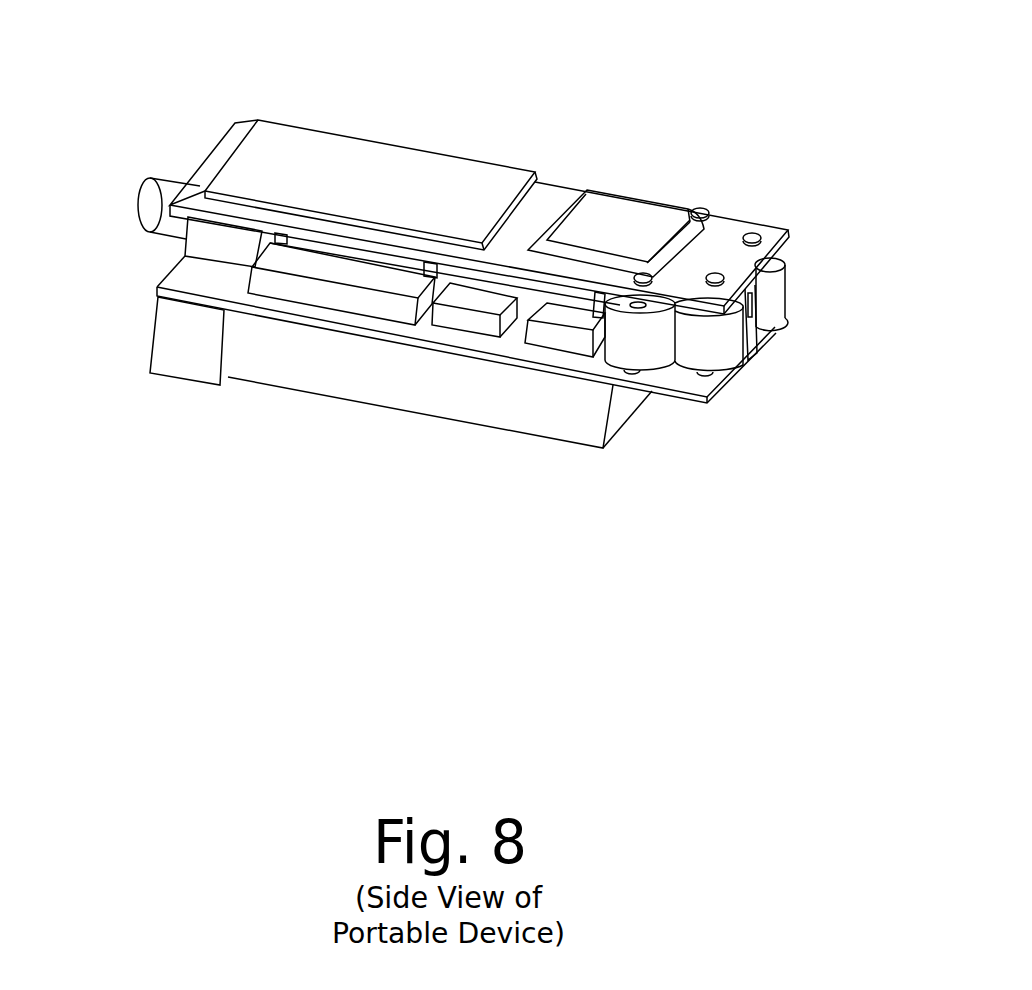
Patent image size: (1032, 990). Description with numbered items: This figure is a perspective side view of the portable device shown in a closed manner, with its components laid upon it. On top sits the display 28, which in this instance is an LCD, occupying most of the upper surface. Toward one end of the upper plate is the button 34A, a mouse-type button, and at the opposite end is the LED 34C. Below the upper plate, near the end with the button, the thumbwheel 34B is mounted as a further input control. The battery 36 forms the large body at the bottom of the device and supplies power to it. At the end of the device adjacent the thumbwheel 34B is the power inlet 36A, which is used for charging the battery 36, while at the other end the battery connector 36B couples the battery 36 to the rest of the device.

The display 28 is at (387, 173).
The button 34A is at (622, 221).
The thumbwheel 34B is at (651, 347).
The LED 34C is at (141, 201).
The battery 36 is at (436, 392).
The power inlet 36A is at (758, 295).
The battery connector 36B is at (192, 347).